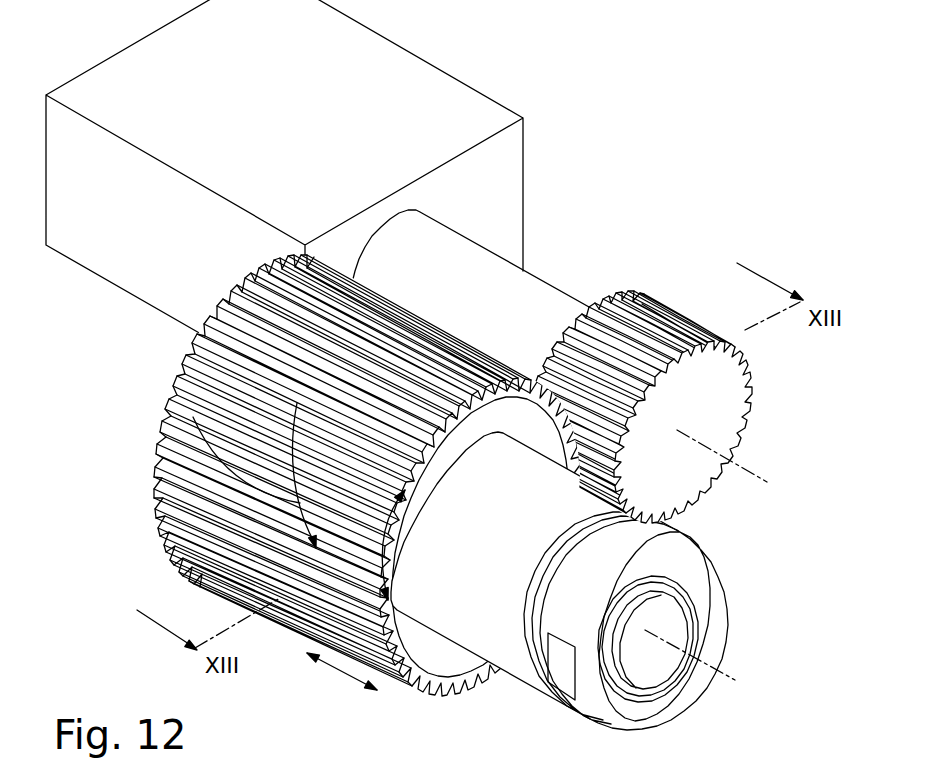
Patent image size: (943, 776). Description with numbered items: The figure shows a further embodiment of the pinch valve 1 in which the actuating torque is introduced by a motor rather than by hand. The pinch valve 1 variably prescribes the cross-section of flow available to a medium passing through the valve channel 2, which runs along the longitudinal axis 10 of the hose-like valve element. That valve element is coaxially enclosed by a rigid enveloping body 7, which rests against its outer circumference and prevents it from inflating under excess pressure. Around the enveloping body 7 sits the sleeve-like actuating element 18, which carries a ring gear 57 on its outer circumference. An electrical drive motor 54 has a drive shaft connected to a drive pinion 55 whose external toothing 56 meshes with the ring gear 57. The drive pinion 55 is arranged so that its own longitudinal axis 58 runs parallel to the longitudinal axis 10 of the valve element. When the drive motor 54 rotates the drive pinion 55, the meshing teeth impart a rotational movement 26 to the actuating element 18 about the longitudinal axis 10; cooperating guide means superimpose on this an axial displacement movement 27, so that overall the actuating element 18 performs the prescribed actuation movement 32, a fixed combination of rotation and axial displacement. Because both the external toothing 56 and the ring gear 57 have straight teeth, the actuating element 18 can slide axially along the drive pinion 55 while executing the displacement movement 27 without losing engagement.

The pinch valve 1 is at (677, 140).
The valve channel 2 is at (628, 660).
The enveloping body 7 is at (590, 603).
The longitudinal axis 10 is at (733, 678).
The actuating element 18 is at (433, 696).
The rotational movement 26 is at (413, 560).
The displacement movement 27 is at (340, 671).
The actuation movement 32 is at (300, 497).
The drive motor 54 is at (457, 108).
The drive pinion 55 is at (696, 386).
The external toothing 56 is at (630, 311).
The ring gear 57 is at (333, 506).
The longitudinal axis 58 is at (757, 473).